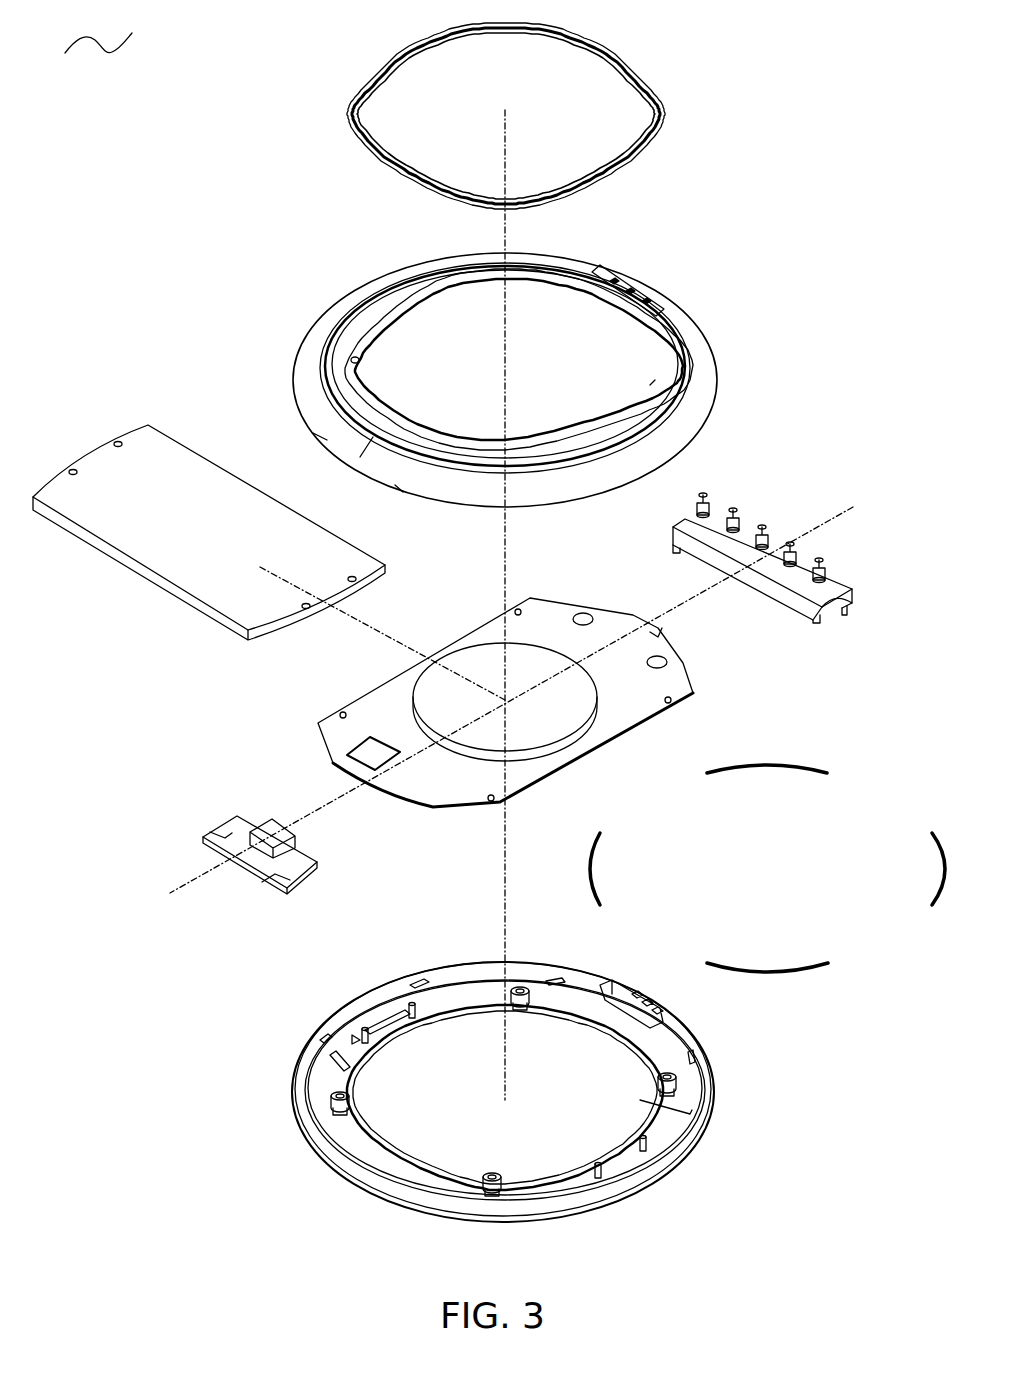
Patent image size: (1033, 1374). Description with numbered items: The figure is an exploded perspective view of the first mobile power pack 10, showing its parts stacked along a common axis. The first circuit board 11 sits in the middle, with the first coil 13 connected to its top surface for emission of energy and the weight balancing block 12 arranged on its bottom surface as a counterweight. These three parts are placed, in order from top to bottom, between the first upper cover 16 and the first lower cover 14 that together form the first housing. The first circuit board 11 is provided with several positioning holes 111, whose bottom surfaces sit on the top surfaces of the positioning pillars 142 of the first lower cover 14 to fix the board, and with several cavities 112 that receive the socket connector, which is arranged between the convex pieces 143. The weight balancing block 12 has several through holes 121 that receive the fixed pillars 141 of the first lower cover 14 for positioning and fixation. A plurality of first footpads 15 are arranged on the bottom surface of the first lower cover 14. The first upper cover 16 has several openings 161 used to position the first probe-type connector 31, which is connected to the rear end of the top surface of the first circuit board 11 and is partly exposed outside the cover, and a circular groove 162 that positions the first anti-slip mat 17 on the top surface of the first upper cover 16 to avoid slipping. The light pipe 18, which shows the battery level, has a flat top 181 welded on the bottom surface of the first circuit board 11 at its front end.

The first mobile power pack 10 is at (98, 26).
The first circuit board 11 is at (572, 715).
The positioning holes 111 is at (490, 802).
The cavities 112 is at (660, 640).
The weight balancing block 12 is at (209, 487).
The through holes 121 is at (118, 440).
The first coil 13 is at (555, 665).
The first lower cover 14 is at (609, 1100).
The fixed pillars 141 is at (613, 1170).
The positioning pillars 142 is at (680, 1085).
The convex pieces 143 is at (660, 1018).
The first footpads 15 is at (780, 770).
The first upper cover 16 is at (558, 362).
The openings 161 is at (627, 278).
The circular groove 162 is at (650, 385).
The first anti-slip mat 17 is at (655, 118).
The light pipe 18 is at (211, 835).
The flat top 181 is at (272, 832).
The first probe-type connector 31 is at (835, 590).